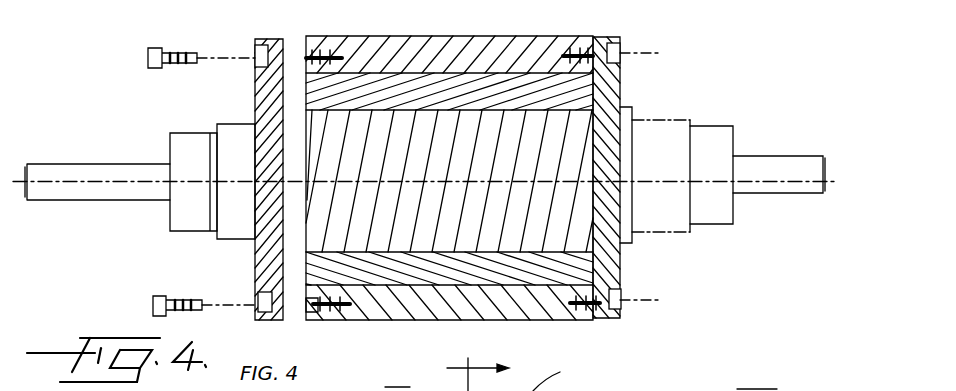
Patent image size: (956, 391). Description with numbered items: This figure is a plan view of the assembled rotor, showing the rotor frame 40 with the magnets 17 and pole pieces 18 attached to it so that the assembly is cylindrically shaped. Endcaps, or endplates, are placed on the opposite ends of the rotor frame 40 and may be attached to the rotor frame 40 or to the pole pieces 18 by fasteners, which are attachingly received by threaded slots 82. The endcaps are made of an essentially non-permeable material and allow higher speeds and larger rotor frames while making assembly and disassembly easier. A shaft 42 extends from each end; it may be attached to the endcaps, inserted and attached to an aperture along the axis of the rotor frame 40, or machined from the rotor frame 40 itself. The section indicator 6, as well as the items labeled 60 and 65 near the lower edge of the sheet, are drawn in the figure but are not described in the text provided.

The section line 6- 6 is at (464, 374).
The magnets 17 is at (393, 103).
The pole pieces 18 is at (443, 63).
The rotor frame 40 is at (573, 160).
The shaft 42 is at (97, 168).
The bolt 60 is at (637, 390).
The lead 65 is at (533, 390).
The threaded slots 82 is at (307, 303).